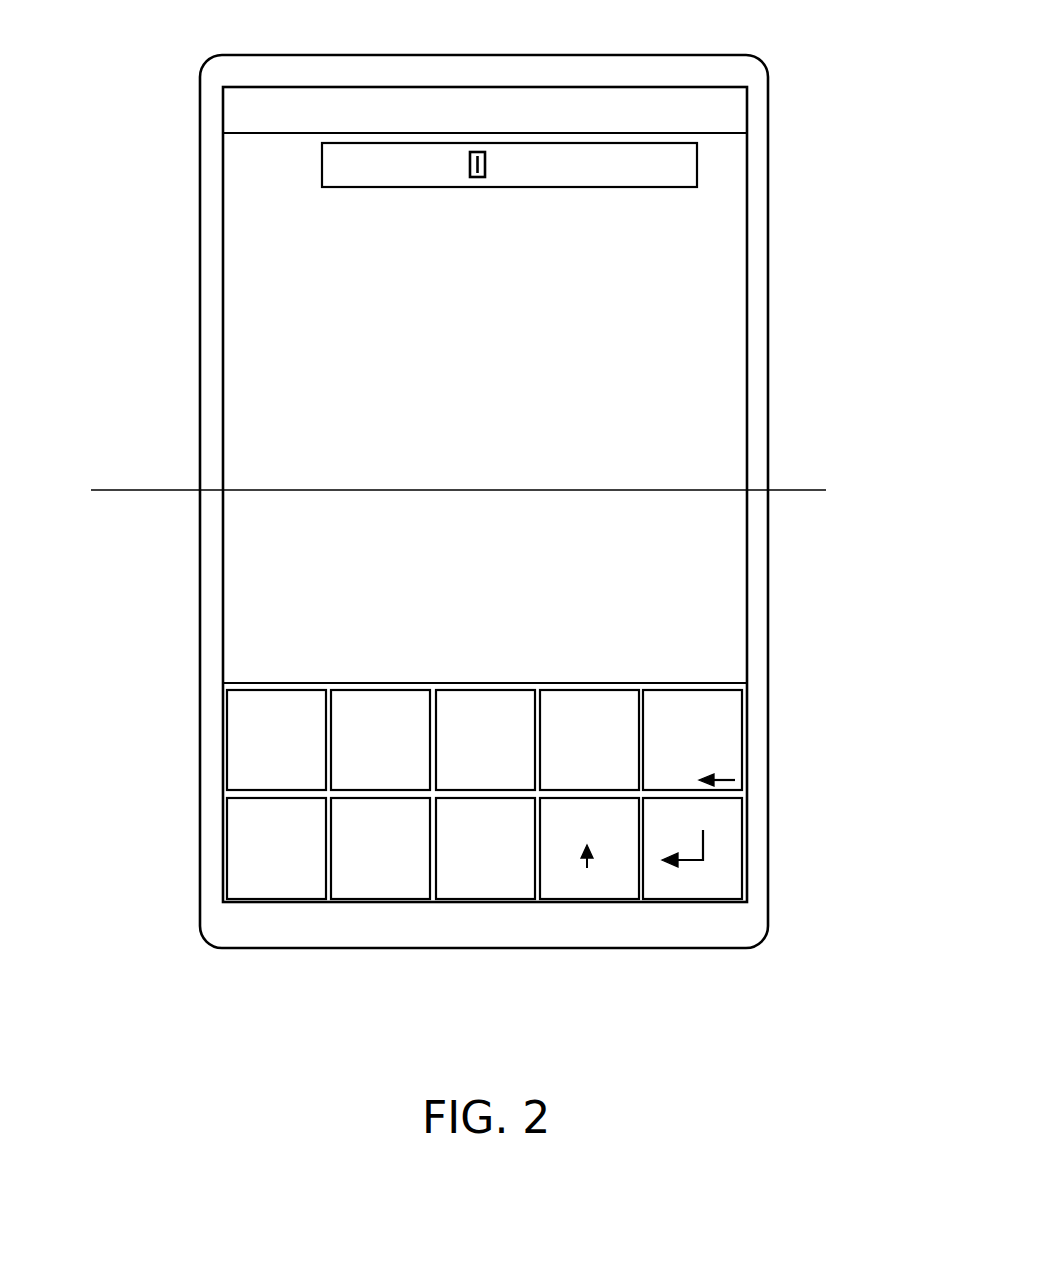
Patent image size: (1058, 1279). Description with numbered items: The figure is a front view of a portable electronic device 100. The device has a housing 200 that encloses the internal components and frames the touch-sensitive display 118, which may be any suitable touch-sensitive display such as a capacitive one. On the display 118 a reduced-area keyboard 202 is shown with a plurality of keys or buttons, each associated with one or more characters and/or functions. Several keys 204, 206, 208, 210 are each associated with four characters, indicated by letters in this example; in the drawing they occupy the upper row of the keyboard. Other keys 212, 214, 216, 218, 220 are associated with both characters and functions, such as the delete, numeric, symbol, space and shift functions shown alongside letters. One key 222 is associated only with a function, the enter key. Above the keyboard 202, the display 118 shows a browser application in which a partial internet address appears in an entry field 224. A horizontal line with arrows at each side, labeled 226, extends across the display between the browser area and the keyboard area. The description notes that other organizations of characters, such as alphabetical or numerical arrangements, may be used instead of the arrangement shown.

The portable electronic device 100 is at (848, 28).
The touch-sensitive display 118 is at (728, 183).
The housing 200 is at (753, 625).
The reduced-area keyboard 202 is at (412, 683).
The key 204 is at (277, 738).
The key 206 is at (345, 702).
The key 208 is at (493, 707).
The key 210 is at (603, 698).
The key 212 is at (728, 742).
The key 214 is at (268, 858).
The key 216 is at (408, 877).
The key 218 is at (451, 878).
The key 220 is at (558, 883).
The enter key 222 is at (718, 870).
The entry field 224 is at (580, 177).
The boundary between display area and keyboard 226 is at (91, 490).